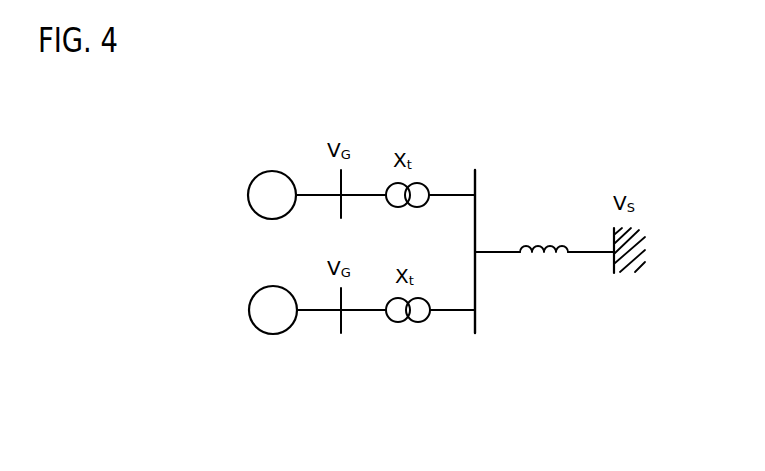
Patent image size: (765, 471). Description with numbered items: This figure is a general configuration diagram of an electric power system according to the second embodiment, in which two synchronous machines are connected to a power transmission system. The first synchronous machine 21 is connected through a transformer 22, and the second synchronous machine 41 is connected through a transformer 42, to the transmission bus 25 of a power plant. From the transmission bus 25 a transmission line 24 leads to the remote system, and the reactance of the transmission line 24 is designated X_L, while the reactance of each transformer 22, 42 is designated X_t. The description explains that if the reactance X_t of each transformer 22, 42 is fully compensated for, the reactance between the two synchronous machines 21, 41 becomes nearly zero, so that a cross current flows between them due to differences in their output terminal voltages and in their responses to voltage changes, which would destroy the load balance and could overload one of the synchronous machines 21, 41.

The synchronous machine 21 is at (270, 219).
The transformer 22 is at (408, 207).
The transmission line 24 is at (500, 253).
The transmission bus 25 is at (474, 215).
The synchronous machine 41 is at (272, 334).
The transformer 42 is at (412, 322).